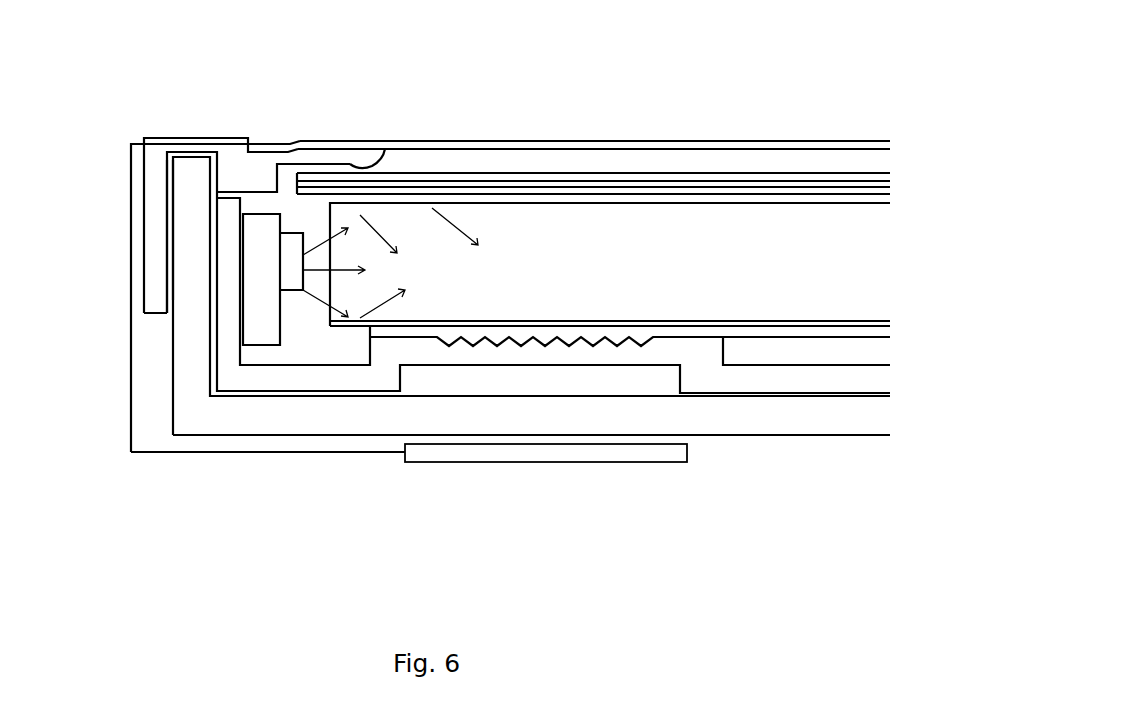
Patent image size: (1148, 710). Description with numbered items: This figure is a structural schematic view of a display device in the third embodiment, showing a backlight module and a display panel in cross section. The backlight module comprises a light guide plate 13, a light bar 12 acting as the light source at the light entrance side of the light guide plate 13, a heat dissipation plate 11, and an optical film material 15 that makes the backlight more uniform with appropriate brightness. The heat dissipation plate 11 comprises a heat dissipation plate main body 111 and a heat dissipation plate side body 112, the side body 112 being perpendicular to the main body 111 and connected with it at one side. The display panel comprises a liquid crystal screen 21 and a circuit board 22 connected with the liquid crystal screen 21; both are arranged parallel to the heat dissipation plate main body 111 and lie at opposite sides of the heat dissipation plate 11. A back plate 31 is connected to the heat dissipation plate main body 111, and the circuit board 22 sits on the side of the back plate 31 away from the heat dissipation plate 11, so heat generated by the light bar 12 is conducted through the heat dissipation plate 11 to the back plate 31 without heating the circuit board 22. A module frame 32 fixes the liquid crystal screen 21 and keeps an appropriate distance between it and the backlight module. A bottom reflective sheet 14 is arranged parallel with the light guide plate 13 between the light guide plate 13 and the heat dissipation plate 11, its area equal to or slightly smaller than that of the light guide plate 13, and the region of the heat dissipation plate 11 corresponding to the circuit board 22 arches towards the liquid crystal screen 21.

The heat dissipation plate 11 is at (235, 378).
The heat dissipation plate main body 111 is at (693, 356).
The heat dissipation plate side body 112 is at (197, 187).
The light bar 12 is at (258, 325).
The light guide plate 13 is at (870, 268).
The bottom reflective sheet 14 is at (693, 331).
The optical film material 15 is at (413, 178).
The liquid crystal screen 21 is at (330, 140).
The circuit board 22 is at (455, 452).
The back plate 31 is at (185, 281).
The module frame 32 is at (153, 161).